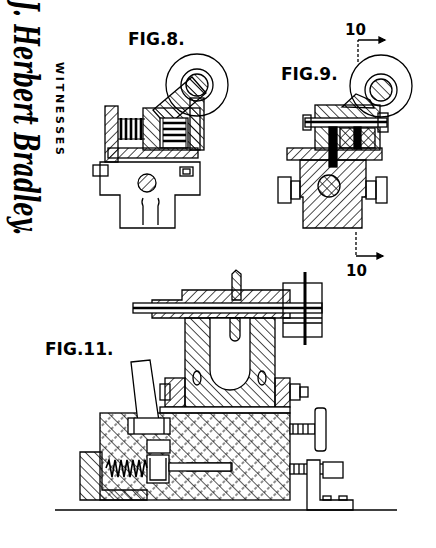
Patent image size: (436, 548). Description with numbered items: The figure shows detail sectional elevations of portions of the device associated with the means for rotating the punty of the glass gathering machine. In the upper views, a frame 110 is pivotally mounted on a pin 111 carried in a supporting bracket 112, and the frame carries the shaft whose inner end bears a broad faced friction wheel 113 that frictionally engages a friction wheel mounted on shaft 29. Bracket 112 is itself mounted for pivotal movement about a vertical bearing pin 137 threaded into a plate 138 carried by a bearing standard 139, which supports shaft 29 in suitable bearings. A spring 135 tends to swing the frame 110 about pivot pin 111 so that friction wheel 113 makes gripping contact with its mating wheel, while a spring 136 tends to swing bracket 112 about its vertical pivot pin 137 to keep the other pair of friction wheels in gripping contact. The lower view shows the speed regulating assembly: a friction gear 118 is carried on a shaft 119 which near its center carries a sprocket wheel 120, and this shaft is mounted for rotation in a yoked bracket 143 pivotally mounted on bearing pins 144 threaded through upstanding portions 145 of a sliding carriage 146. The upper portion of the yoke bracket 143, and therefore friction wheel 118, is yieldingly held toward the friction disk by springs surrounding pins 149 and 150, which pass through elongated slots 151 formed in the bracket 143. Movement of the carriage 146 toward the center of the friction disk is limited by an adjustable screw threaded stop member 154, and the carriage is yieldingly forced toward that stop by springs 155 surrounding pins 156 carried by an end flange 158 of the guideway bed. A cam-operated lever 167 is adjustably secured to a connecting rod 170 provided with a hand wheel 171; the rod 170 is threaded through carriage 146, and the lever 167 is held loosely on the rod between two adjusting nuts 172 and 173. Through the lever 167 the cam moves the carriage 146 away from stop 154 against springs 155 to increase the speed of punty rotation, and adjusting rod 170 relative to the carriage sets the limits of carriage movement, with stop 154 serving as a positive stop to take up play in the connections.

In FIG. 8, the shaft 29 is at (156, 187).
In FIG. 9, the shaft 29 is at (342, 197).
In FIG. 8, the frame 110 is at (172, 96).
In FIG. 9, the pin 111 is at (390, 123).
In FIG. 8, the supporting bracket 112 is at (206, 120).
In FIG. 9, the supporting bracket 112 is at (378, 138).
In FIG. 8, the friction wheel 113 is at (214, 72).
In FIG. 9, the friction wheel 113 is at (392, 70).
In FIG. 11, the friction gear 118 is at (305, 272).
In FIG. 11, the shaft 119 is at (134, 303).
In FIG. 11, the sprocket wheel 120 is at (236, 271).
In FIG. 8, the spring 135 is at (190, 133).
In FIG. 8, the spring 136 is at (118, 138).
In FIG. 9, the vertical bearing pin 137 is at (383, 155).
In FIG. 8, the plate 138 is at (200, 153).
In FIG. 9, the plate 138 is at (327, 156).
In FIG. 8, the bearing standard 139 is at (133, 170).
In FIG. 9, the bearing standard 139 is at (318, 168).
In FIG. 11, the yoked bracket 143 is at (276, 351).
In FIG. 11, the bearing pins 144 is at (178, 384).
In FIG. 11, the upstanding portions 145 is at (166, 395).
In FIG. 11, the sliding carriage 146 is at (255, 472).
In FIG. 11, the pin 149 is at (300, 390).
In FIG. 11, the pin 150 is at (230, 373).
In FIG. 11, the elongated slots 151 is at (234, 340).
In FIG. 11, the adjustable stop member 154 is at (335, 478).
In FIG. 11, the springs 155 is at (130, 478).
In FIG. 11, the pins 156 is at (180, 473).
In FIG. 11, the end flange 158 is at (80, 485).
In FIG. 11, the lever 167 is at (132, 383).
In FIG. 11, the connecting rod 170 is at (302, 435).
In FIG. 11, the hand wheel 171 is at (328, 431).
In FIG. 11, the adjusting nut 172 is at (128, 424).
In FIG. 11, the adjusting nut 173 is at (147, 445).